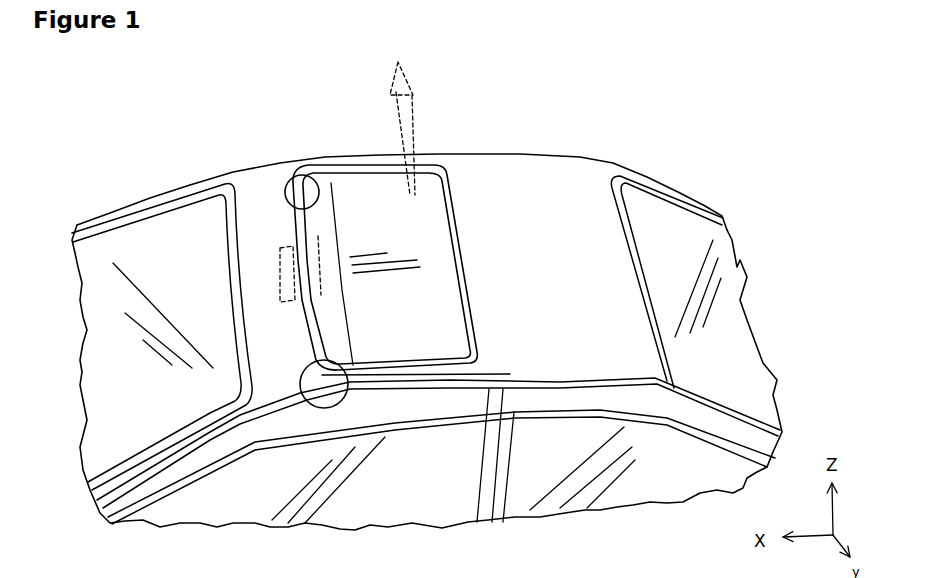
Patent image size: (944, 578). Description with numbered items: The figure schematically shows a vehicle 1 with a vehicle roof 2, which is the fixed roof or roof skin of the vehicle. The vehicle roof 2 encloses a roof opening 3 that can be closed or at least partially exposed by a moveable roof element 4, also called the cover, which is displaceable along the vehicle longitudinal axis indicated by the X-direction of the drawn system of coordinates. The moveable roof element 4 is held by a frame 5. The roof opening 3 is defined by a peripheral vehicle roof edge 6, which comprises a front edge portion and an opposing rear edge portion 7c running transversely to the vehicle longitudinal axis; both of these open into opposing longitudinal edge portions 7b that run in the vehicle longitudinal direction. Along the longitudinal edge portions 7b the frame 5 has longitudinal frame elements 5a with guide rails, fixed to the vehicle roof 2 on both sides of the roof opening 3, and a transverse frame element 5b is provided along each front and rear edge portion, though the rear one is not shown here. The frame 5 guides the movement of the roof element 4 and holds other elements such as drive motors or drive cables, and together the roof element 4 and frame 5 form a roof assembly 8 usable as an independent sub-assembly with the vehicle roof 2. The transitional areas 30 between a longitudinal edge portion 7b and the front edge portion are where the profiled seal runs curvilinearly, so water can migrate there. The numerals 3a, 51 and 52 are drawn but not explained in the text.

The vehicle 1 is at (712, 152).
The vehicle roof 2 is at (522, 168).
The roof opening 3 is at (302, 348).
The pillar flange 3a is at (291, 224).
The moveable roof element 4 is at (413, 223).
The frame 5 is at (354, 156).
The longitudinal frame element 5a is at (378, 156).
The transverse frame element 5b is at (285, 185).
The hidden connecting element 51 is at (416, 128).
The hidden fastening element 52 is at (280, 263).
The vehicle roof edge 6 is at (296, 310).
The longitudinal edge portion 7b is at (361, 185).
The rear edge portion 7c is at (460, 304).
The roof assembly 8 is at (453, 122).
The transitional area 30 is at (293, 176).